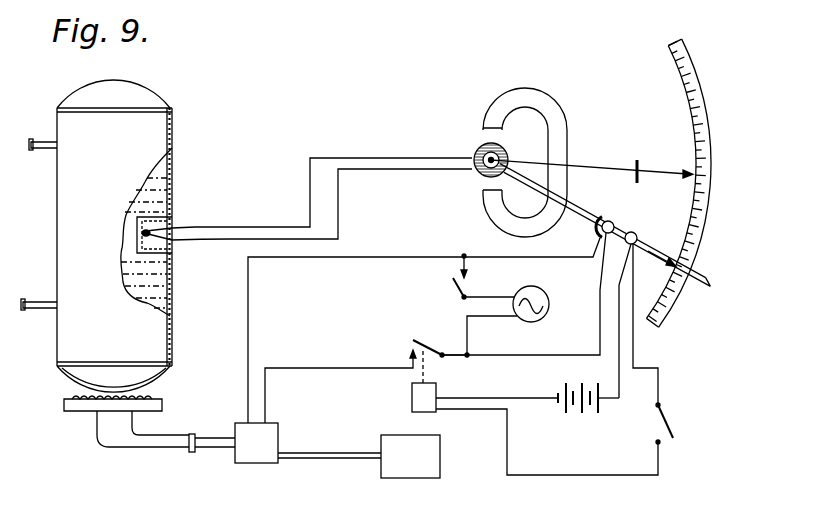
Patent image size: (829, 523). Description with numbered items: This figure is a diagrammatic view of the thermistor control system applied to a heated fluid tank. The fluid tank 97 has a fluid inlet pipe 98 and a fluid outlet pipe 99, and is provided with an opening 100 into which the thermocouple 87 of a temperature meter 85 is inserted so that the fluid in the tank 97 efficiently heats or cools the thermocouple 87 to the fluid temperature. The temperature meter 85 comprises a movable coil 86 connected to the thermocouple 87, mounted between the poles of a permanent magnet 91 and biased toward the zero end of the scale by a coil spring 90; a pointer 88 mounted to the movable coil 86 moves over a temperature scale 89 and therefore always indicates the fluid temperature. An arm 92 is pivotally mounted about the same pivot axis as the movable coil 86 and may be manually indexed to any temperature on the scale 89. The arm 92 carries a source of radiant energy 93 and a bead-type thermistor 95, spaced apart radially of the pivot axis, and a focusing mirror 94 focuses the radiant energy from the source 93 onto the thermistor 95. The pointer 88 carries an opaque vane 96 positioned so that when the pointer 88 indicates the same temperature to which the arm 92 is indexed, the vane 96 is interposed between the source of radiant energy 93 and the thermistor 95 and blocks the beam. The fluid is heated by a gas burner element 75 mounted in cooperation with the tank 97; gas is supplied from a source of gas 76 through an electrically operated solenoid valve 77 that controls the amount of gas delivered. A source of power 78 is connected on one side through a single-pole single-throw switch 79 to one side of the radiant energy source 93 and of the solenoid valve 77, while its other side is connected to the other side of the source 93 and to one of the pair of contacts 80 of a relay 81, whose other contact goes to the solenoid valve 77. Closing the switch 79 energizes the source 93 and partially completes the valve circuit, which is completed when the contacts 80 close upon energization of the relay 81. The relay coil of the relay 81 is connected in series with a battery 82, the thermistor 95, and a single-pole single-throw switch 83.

The gas burner element 75 is at (162, 408).
The source of gas 76 is at (405, 469).
The solenoid valve 77 is at (268, 437).
The source of power 78 is at (548, 298).
The single-pole single-throw switch 79 is at (474, 292).
The pair of contacts 80 is at (410, 348).
The relay 81 is at (412, 394).
The battery 82 is at (573, 414).
The single-pole single-throw switch 83 is at (668, 442).
The temperature meter 85 is at (570, 98).
The movable coil 86 is at (472, 148).
The thermocouple 87 is at (172, 252).
The pointer 88 is at (611, 162).
The temperature scale 89 is at (712, 122).
The coil spring 90 is at (498, 149).
The permanent magnet 91 is at (518, 86).
The arm 92 is at (594, 210).
The source of radiant energy 93 is at (630, 231).
The focusing mirror 94 is at (597, 228).
The bead-type thermistor 95 is at (644, 235).
The opaque vane 96 is at (639, 162).
The fluid tank 97 is at (172, 144).
The fluid inlet pipe 98 is at (36, 301).
The fluid outlet pipe 99 is at (36, 141).
The opening 100 is at (174, 220).